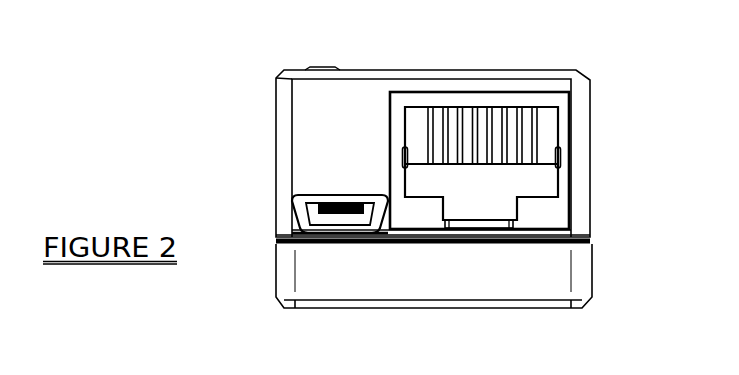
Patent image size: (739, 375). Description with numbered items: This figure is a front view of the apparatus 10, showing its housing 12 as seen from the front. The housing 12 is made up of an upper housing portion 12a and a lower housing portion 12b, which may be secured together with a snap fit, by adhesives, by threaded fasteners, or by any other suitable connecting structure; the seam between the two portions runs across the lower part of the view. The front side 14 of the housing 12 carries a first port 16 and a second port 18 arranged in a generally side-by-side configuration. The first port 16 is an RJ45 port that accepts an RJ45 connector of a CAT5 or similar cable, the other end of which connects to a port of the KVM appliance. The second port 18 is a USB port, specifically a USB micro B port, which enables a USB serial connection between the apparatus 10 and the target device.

The apparatus 10 is at (466, 40).
The housing 12 is at (266, 282).
The upper housing portion 12a is at (541, 70).
The lower housing portion 12b is at (543, 283).
The front side 14 is at (298, 120).
The RJ45 port 16 is at (513, 177).
The USB port 18 is at (318, 213).